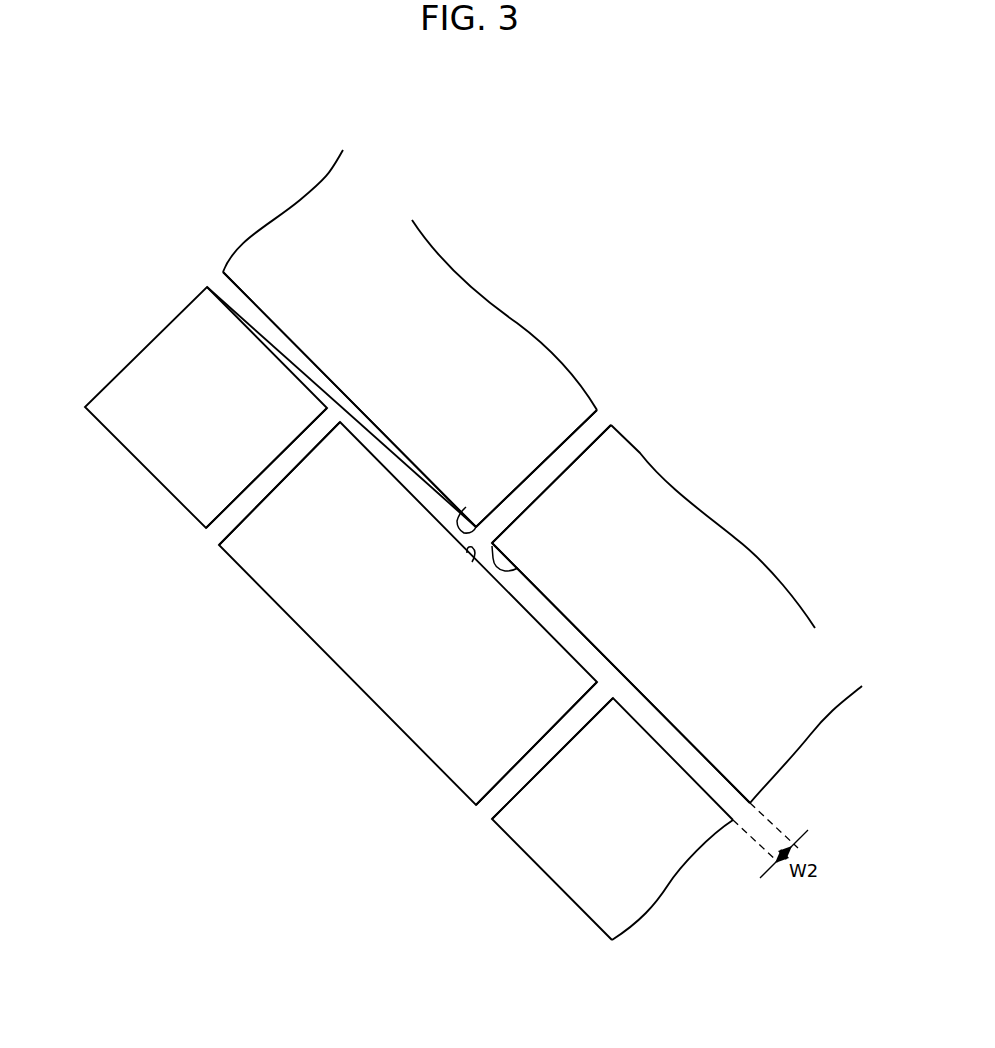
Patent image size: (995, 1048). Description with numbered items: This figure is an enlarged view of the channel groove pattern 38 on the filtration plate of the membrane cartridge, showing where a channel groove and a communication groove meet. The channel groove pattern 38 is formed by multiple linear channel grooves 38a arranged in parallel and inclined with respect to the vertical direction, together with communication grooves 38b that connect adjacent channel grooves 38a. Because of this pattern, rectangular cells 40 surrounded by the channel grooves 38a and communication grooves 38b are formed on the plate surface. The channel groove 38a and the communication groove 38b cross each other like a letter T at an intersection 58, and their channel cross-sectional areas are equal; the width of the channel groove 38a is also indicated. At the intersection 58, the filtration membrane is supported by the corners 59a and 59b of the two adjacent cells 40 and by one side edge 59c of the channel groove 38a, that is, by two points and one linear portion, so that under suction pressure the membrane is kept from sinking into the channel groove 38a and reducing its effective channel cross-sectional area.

The channel groove pattern 38 is at (80, 537).
The channel groove 38a is at (226, 290).
The communication groove 38b is at (220, 528).
The cell 40 is at (215, 418).
The intersection 58 is at (468, 542).
The corner 59a is at (466, 507).
The corner 59b is at (518, 568).
The side edge 59c is at (472, 562).